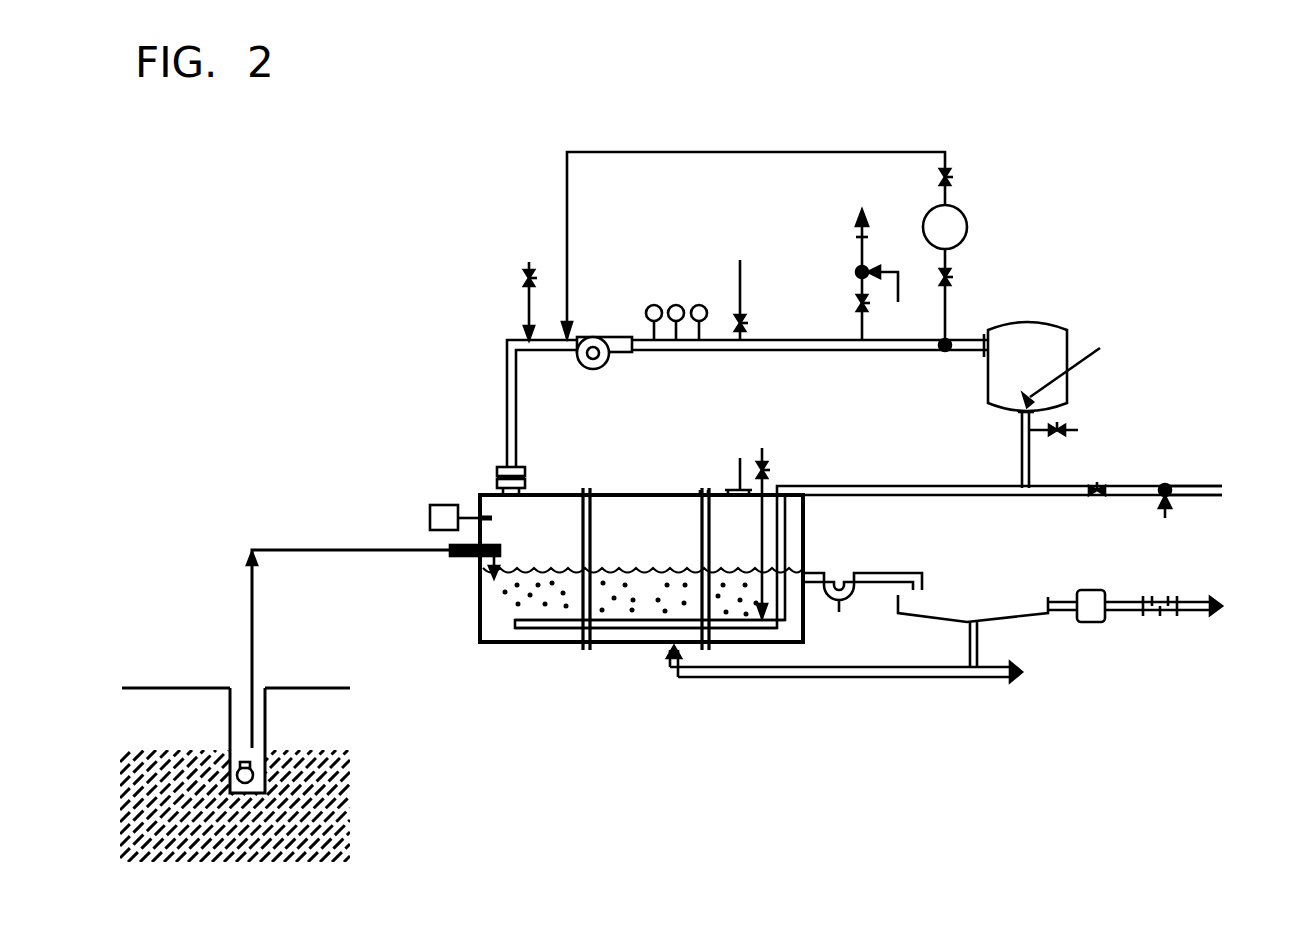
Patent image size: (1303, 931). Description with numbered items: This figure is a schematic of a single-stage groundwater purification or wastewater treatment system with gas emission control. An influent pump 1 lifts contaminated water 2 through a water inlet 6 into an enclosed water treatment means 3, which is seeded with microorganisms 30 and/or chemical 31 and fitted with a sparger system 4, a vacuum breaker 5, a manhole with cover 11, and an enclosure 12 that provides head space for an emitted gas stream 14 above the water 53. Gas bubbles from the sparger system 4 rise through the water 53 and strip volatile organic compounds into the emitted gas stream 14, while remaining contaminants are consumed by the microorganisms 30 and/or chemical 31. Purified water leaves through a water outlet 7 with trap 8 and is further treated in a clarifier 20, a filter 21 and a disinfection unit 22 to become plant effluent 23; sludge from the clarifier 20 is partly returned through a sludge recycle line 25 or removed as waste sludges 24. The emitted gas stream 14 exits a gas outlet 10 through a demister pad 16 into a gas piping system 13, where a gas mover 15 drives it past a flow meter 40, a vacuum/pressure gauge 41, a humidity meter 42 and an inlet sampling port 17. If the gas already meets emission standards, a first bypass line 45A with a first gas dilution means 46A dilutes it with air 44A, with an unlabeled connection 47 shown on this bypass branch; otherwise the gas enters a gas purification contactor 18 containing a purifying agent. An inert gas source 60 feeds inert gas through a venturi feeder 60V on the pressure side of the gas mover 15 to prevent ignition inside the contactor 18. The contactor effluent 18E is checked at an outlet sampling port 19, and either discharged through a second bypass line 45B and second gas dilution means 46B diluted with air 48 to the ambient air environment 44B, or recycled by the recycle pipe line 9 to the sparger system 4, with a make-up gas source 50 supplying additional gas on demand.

The influent pump 1 is at (248, 765).
The contaminated water 2 is at (338, 810).
The water treatment means 3 is at (530, 642).
The sparger system 4 is at (640, 628).
The vacuum breaker 5 is at (430, 518).
The water inlet 6 is at (465, 555).
The water outlet 7 is at (805, 573).
The trap 8 is at (839, 612).
The recycle pipe line 9 is at (833, 485).
The gas outlet 10 is at (497, 470).
The manhole with cover 11 is at (740, 458).
The enclosure 12 is at (643, 496).
The gas piping system 13 is at (510, 405).
The emitted gas stream 14 is at (522, 522).
The gas mover 15 is at (609, 337).
The demister pad 16 is at (497, 475).
The inlet sampling port 17 is at (753, 282).
The gas purification contactor 18 is at (1028, 323).
The contactor effluent 18E is at (1101, 370).
The outlet sampling port 19 is at (1073, 430).
The clarifier 20 is at (938, 613).
The filter 21 is at (1091, 590).
The disinfection unit 22 is at (1158, 618).
The plant effluent 23 is at (1159, 610).
The waste sludges 24 is at (1035, 678).
The sludge recycle line 25 is at (905, 677).
The microorganisms 30 is at (495, 603).
The chemical 31 is at (507, 592).
The flow meter 40 is at (654, 305).
The vacuum/pressure gauge 41 is at (676, 305).
The humidity meter 42 is at (699, 305).
The air 44A is at (867, 257).
The ambient air environment 44B is at (1228, 490).
The first bypass line 45A is at (858, 322).
The second bypass line 45B is at (1058, 486).
The first gas dilution means 46A is at (856, 272).
The second gas dilution means 46B is at (1166, 487).
The sampling port 47 is at (856, 237).
The air 48 is at (1027, 414).
The make-up gas source 50 is at (646, 421).
The water 53 is at (642, 600).
The inert gas source 60 is at (961, 211).
The venturi feeder 60V is at (947, 373).